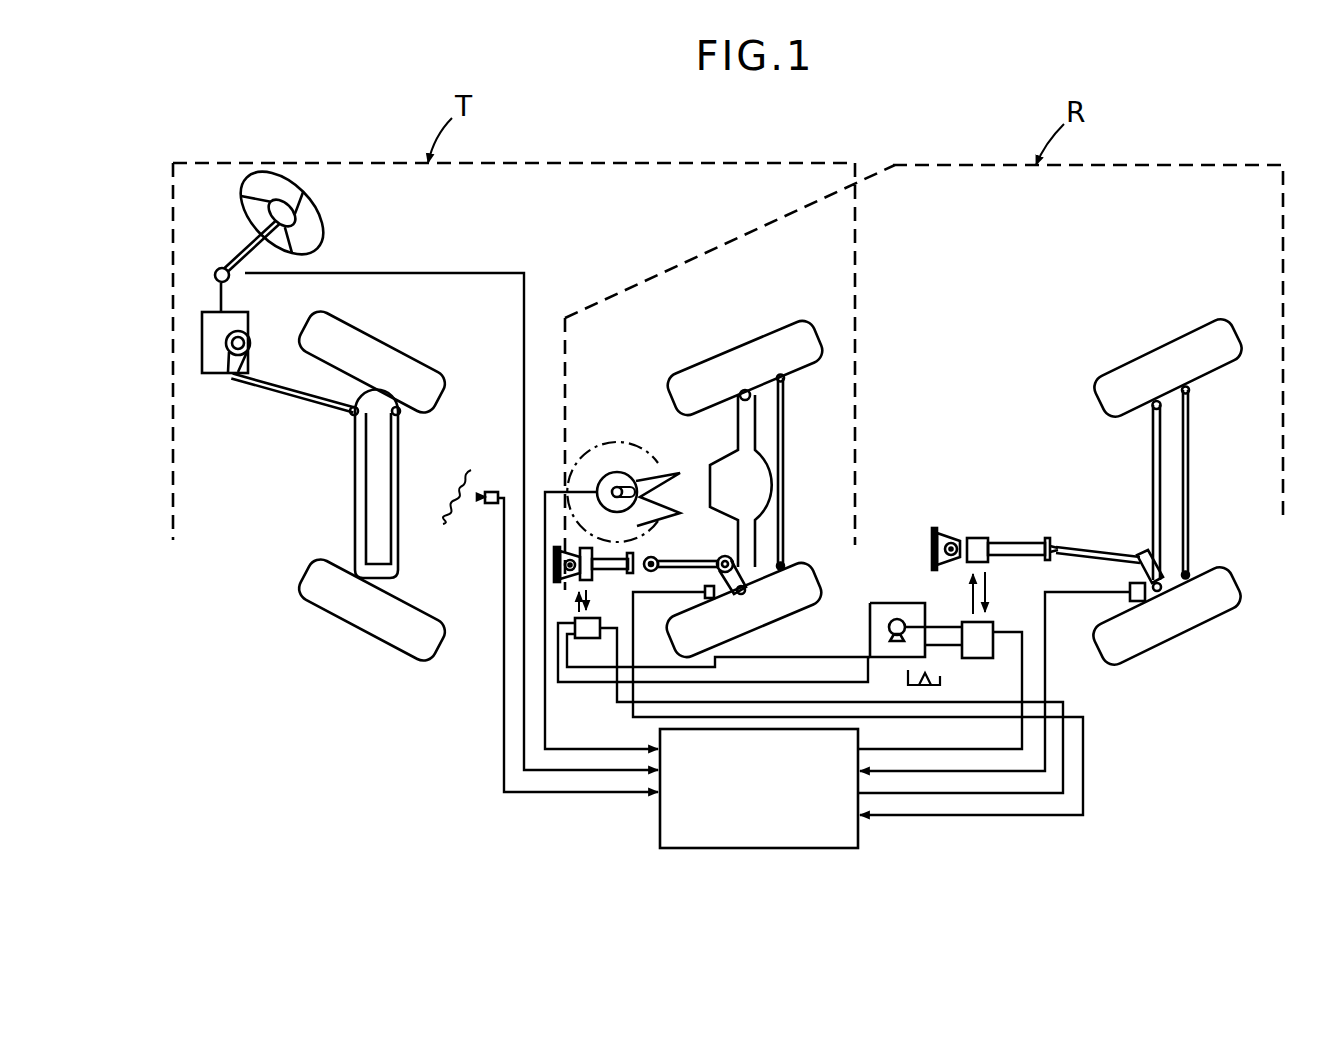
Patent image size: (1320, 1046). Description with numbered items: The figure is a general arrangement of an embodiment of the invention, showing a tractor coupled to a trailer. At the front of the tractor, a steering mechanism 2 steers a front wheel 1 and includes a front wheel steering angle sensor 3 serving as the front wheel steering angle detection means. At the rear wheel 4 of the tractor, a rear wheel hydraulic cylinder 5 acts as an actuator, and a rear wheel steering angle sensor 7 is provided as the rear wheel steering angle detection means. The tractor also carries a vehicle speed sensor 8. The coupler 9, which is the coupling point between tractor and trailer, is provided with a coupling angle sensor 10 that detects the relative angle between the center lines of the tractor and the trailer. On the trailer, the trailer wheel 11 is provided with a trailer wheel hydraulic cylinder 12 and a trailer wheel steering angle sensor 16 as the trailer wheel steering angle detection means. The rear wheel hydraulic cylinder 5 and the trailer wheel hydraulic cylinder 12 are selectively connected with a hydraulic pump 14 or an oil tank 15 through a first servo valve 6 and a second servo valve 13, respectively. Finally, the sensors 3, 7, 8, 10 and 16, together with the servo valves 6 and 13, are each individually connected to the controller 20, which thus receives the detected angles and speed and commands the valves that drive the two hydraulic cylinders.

The front wheels 1 is at (399, 353).
The steering mechanism 2 is at (206, 294).
The front wheel steering angle sensor 3 is at (246, 272).
The rear wheel 4 is at (738, 352).
The rear wheel hydraulic cylinder 5 is at (620, 556).
The servo valve 6 is at (590, 618).
The rear wheel steering angle sensor 7 is at (704, 592).
The vehicle speed sensor 8 is at (496, 490).
The coupler 9 is at (586, 455).
The coupling angle sensor 10 is at (627, 471).
The trailer wheel 11 is at (1160, 348).
The trailer wheel hydraulic cylinder 12 is at (1000, 543).
The servo valve 13 is at (983, 622).
The hydraulic pump 14 is at (896, 619).
The oil tank 15 is at (941, 681).
The trailer wheel steering angle sensor 16 is at (1130, 590).
The controller 20 is at (831, 852).